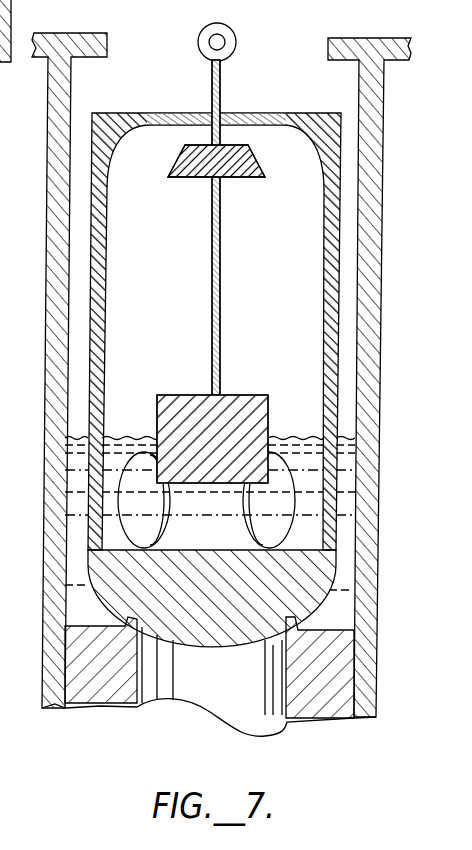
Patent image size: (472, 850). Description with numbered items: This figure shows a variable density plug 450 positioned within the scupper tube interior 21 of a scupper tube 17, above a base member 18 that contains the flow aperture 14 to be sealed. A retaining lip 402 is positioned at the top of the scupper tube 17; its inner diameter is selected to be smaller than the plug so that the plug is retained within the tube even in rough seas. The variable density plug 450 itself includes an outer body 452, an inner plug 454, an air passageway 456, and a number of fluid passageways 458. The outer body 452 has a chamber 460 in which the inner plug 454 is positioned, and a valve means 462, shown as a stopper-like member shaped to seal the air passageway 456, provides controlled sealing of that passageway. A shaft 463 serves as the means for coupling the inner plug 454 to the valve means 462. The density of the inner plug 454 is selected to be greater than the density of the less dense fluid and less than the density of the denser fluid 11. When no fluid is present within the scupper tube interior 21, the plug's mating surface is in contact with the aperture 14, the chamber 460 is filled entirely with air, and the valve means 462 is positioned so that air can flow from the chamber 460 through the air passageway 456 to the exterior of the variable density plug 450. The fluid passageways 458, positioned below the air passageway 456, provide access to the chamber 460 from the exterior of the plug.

The retaining lip 402 is at (88, 43).
The scupper tube 17 is at (379, 104).
The variable density plug 450 is at (273, 110).
The outer body 452 is at (135, 113).
The air passageway 456 is at (207, 112).
The shaft 463 is at (219, 240).
The valve means 462 is at (237, 168).
The chamber 460 is at (177, 281).
The fluid passageways 458 is at (260, 532).
The inner plug 454 is at (253, 395).
The denser fluid 11 is at (339, 595).
The base member 18 is at (338, 708).
The scupper tube interior 21 is at (215, 751).
The flow aperture 14 is at (243, 705).